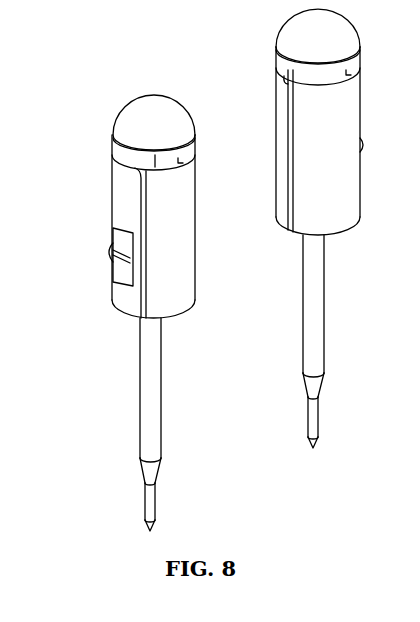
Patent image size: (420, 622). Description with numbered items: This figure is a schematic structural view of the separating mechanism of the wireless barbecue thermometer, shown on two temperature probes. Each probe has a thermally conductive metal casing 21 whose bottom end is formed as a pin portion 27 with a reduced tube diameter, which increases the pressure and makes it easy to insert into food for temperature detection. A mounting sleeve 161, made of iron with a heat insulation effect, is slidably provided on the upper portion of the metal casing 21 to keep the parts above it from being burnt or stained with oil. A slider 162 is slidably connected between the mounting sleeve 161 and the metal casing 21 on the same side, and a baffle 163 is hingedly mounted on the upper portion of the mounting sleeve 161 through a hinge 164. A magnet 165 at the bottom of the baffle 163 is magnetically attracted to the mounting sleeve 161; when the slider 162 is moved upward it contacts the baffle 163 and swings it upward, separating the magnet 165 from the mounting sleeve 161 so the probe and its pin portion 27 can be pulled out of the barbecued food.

The mounting sleeve 161 is at (165, 205).
The slider 162 is at (110, 246).
The baffle 163 is at (292, 42).
The hinge 164 is at (286, 80).
The magnet 165 is at (112, 153).
The metal casing 21 is at (148, 385).
The pin portion 27 is at (148, 495).